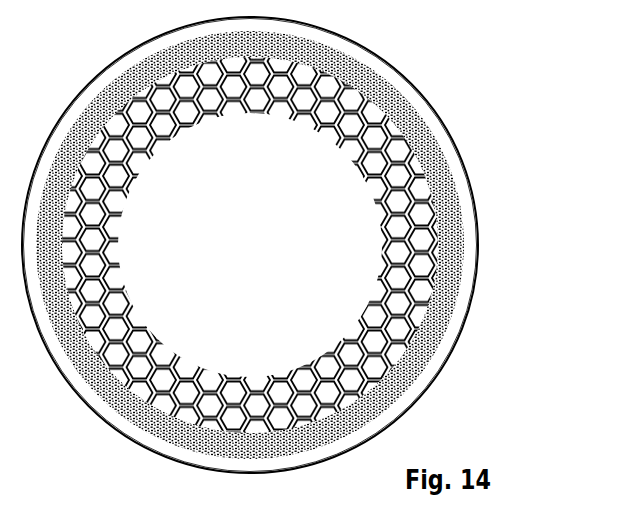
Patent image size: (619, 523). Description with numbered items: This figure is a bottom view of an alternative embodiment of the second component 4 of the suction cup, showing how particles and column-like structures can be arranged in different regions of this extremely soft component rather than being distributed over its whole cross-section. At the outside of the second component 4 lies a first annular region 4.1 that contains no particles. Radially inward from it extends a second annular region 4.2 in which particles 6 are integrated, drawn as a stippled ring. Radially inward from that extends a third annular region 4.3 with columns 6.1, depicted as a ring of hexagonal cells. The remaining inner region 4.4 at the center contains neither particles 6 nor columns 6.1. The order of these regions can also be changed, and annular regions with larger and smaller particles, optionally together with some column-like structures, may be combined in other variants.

The second component 4 is at (452, 103).
The first annular region 4.1 is at (445, 138).
The particles 6 is at (447, 182).
The second annular region 4.2 is at (462, 228).
The columns 6.1 is at (430, 262).
The third annular region 4.3 is at (418, 316).
The inner region 4.4 is at (280, 298).